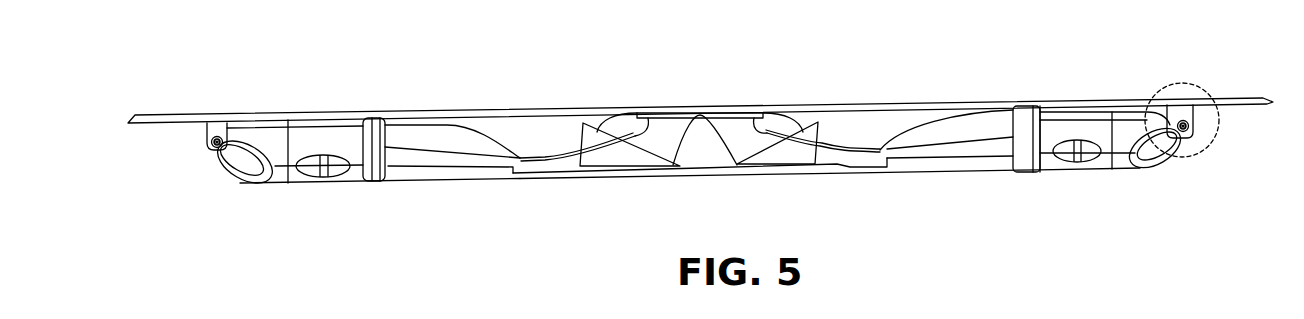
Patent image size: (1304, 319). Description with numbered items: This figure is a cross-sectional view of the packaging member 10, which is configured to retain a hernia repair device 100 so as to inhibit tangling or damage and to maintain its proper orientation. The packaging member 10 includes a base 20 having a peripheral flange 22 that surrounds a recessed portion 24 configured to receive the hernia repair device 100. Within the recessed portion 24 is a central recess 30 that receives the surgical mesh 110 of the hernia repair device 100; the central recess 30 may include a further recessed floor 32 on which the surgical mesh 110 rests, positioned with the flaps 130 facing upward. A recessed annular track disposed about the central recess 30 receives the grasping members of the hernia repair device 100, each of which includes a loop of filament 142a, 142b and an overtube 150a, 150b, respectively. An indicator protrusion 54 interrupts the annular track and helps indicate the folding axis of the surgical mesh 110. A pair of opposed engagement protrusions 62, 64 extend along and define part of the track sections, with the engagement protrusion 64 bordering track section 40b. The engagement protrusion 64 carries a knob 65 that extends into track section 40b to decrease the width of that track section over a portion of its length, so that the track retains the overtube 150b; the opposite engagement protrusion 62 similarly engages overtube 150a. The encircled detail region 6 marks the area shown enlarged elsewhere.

The packaging member 10 is at (812, 33).
The peripheral flange 22 is at (1233, 93).
The knob 65 is at (227, 128).
The track section 40b is at (210, 132).
The engagement protrusion 64 is at (323, 142).
The overtube 150b is at (452, 138).
The filament 142b is at (572, 148).
The central recess 30 is at (540, 165).
The recessed floor 32 is at (597, 177).
The surgical mesh 110 is at (727, 177).
The hernia repair device 100 is at (848, 182).
The indicator protrusion 54 is at (740, 127).
The flaps 130 is at (737, 158).
The filament 142a is at (853, 148).
The recessed portion 24 is at (927, 123).
The overtube 150a is at (990, 127).
The engagement protrusion 62 is at (1085, 128).
The base 20 is at (1085, 170).
The detail region 6 is at (1218, 128).